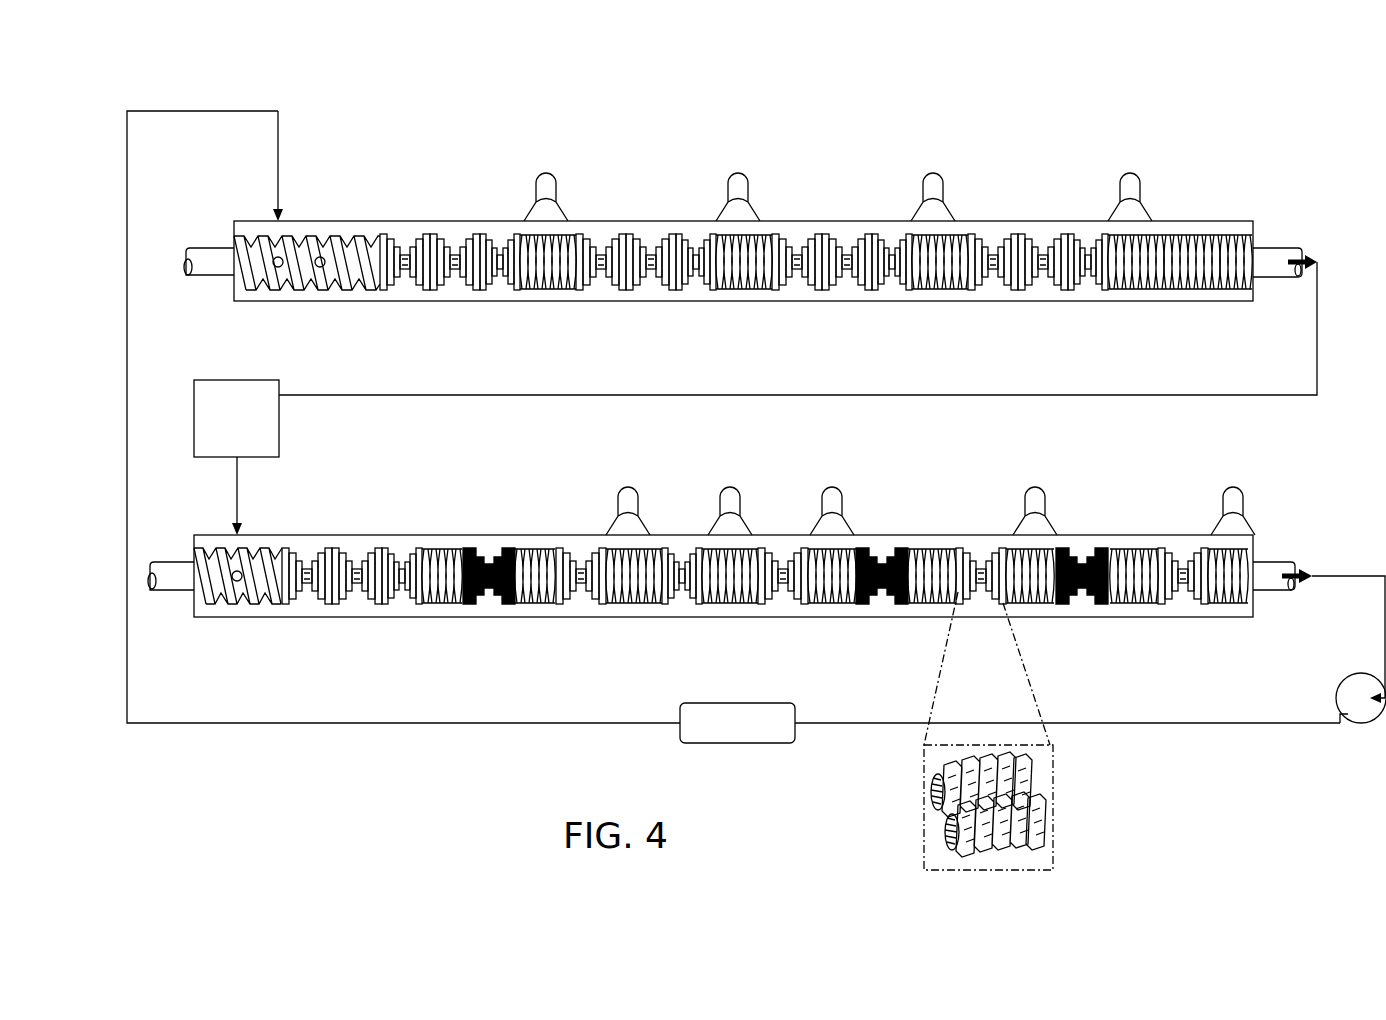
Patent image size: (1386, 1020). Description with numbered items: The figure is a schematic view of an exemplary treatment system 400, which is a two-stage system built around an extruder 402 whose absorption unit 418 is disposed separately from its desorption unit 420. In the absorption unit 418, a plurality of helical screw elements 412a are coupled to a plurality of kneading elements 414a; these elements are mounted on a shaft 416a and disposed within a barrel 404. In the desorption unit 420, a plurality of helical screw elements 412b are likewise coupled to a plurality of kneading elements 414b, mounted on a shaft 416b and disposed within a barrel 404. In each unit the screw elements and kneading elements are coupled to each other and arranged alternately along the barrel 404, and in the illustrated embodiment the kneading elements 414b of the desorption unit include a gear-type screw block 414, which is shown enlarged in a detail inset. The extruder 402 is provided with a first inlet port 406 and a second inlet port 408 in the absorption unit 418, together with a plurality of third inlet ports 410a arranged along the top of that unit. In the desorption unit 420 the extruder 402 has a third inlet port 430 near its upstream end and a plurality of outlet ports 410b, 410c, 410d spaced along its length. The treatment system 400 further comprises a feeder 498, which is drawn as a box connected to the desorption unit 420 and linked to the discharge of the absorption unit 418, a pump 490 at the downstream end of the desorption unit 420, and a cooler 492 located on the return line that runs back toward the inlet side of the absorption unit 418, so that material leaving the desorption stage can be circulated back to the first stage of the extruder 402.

The treatment system 400 is at (1262, 92).
The extruder 402 is at (739, 357).
The barrel 404 is at (302, 221).
The first inlet port 406 is at (276, 268).
The second inlet port 408 is at (320, 268).
The third inlet ports 410a is at (548, 184).
The outlet port 410b is at (631, 496).
The outlet port 410c is at (1039, 496).
The outlet port 410d is at (1237, 496).
The screw elements 412a is at (353, 232).
The screw elements 412b is at (424, 546).
The gear-type screw block 414 is at (926, 792).
The kneading elements 414a is at (451, 232).
The kneading elements 414b is at (513, 546).
The shaft 416a is at (208, 250).
The shaft 416b is at (178, 564).
The absorption unit 418 is at (1228, 214).
The desorption unit 420 is at (722, 568).
The third inlet port 430 is at (237, 584).
The pump 490 is at (1356, 673).
The cooler 492 is at (721, 734).
The feeder 498 is at (221, 428).